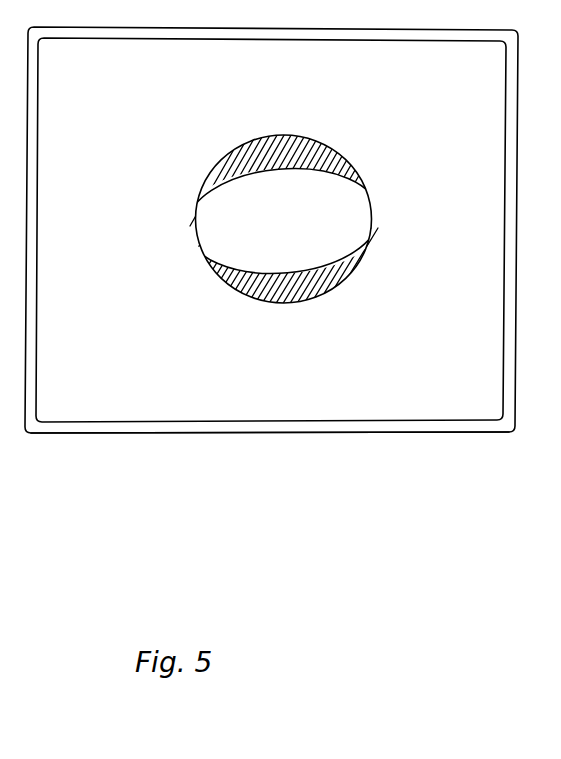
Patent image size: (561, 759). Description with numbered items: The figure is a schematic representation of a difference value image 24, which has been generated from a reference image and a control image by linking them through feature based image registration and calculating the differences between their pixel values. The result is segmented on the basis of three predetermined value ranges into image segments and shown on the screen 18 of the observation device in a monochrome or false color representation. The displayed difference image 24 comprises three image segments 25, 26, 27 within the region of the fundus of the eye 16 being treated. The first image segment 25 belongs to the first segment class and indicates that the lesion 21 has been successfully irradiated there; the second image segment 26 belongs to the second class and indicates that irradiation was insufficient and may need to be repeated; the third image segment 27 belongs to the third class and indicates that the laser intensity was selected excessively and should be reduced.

The fundus of the eye 16 is at (87, 387).
The screen 18 is at (218, 434).
The difference value image 24 is at (398, 425).
The lesion 21 is at (195, 233).
The first image segment 25 is at (342, 222).
The second image segment 26 is at (302, 142).
The third image segment 27 is at (292, 300).